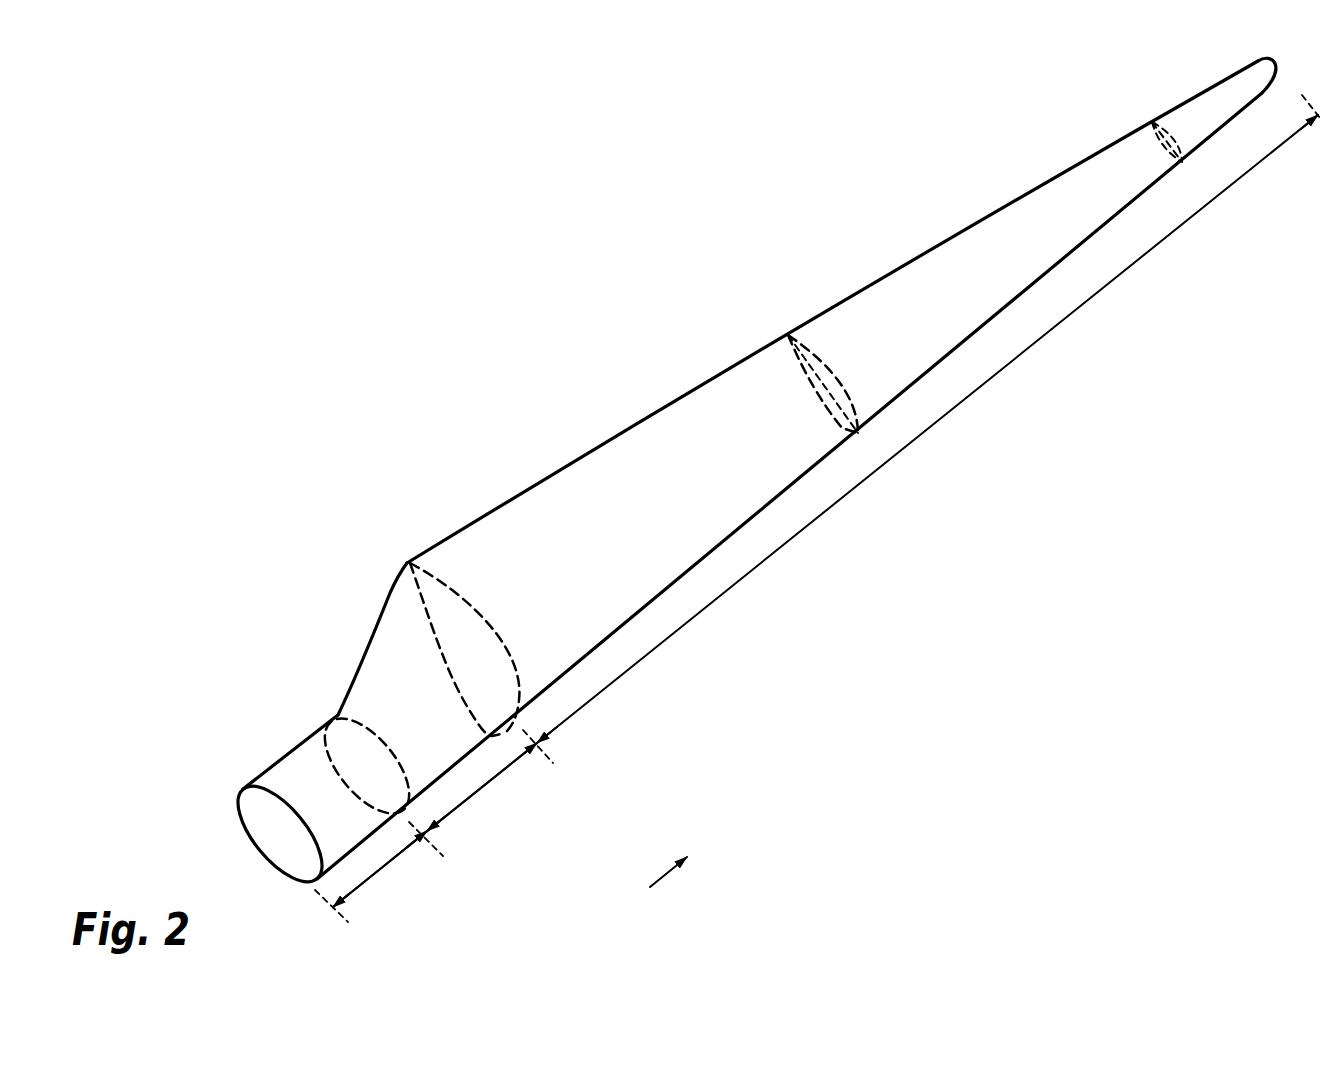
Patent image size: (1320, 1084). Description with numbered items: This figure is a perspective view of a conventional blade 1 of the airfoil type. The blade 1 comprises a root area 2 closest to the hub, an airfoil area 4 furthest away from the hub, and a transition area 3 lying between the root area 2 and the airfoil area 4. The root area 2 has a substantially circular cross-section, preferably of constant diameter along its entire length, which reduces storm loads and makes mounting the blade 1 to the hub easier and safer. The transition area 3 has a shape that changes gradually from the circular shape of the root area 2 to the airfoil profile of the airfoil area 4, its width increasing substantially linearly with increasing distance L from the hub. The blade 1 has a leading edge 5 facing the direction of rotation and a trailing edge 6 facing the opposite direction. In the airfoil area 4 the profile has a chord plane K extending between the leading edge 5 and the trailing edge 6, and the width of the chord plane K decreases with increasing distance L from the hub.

The blade 1 is at (749, 476).
The root area 2 is at (383, 872).
The transition area 3 is at (485, 792).
The airfoil area 4 is at (848, 493).
The leading edge 5 is at (965, 347).
The trailing edge 6 is at (972, 223).
The chord plane K is at (827, 375).
The distance from the hub L is at (676, 857).